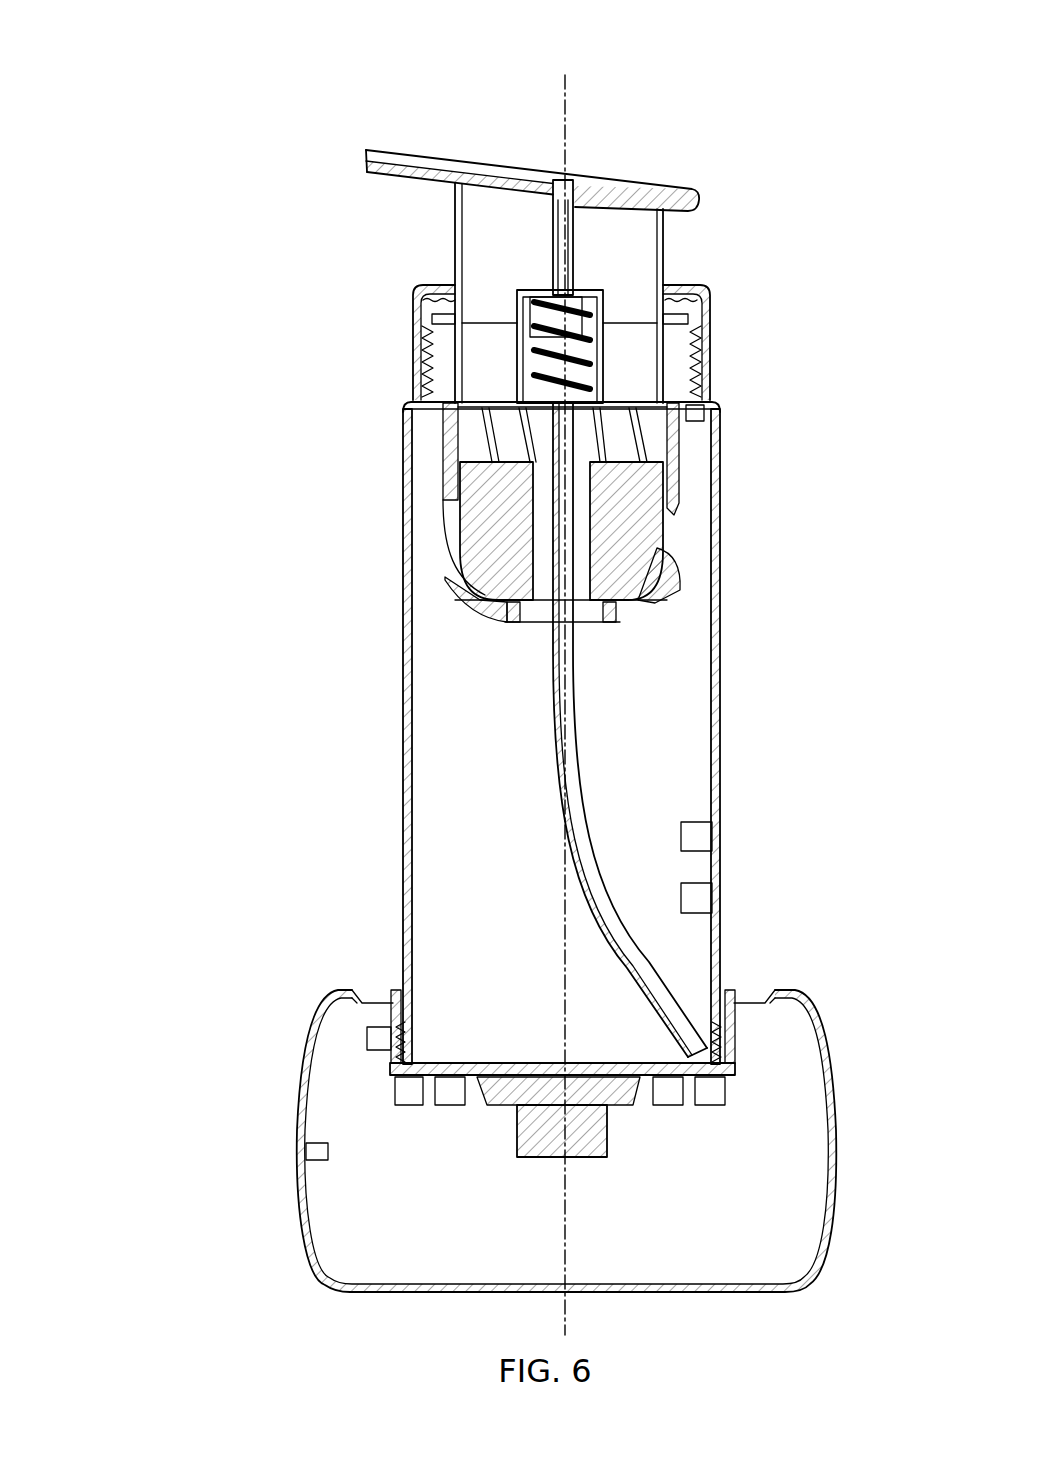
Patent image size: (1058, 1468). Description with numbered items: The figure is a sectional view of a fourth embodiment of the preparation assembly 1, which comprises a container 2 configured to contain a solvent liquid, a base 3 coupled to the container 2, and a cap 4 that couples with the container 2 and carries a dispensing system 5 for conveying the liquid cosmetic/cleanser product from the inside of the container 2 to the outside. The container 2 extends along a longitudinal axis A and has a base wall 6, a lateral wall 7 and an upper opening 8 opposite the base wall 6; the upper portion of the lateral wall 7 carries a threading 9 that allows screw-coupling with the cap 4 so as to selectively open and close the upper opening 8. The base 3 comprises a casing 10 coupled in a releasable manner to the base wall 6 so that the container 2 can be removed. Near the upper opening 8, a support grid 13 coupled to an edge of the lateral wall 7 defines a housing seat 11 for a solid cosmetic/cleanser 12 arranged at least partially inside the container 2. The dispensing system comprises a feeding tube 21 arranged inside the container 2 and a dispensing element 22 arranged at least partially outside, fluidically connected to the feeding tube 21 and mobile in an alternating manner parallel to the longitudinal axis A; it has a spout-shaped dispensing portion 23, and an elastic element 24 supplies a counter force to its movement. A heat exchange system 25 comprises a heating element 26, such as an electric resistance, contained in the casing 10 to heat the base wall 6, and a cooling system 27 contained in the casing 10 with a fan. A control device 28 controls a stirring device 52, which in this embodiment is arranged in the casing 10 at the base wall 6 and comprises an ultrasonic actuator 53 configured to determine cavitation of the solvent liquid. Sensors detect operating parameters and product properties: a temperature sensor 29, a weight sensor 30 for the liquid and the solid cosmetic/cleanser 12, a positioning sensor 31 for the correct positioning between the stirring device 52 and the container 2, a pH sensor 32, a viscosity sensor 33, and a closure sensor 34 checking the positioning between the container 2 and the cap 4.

The preparation assembly 1 is at (230, 212).
The longitudinal axis A is at (563, 127).
The container 2 is at (372, 708).
The base 3 is at (214, 1134).
The cap 4 is at (657, 135).
The dispensing system 5 is at (708, 258).
The base wall 6 is at (636, 1060).
The lateral wall 7 is at (407, 770).
The upper opening 8 is at (628, 295).
The threading 9 is at (432, 368).
The casing 10 is at (315, 1237).
The housing seat 11 is at (437, 471).
The solid cosmetic/cleanser 12 is at (623, 535).
The support grid 13 is at (675, 438).
The feeding tube 21 is at (570, 748).
The dispensing element 22 is at (500, 122).
The dispensing portion 23 is at (414, 155).
The elastic element 24 is at (530, 298).
The heat exchange system 25 is at (655, 1142).
The heating element 26 is at (450, 1090).
The cooling system 27 is at (672, 1088).
The control device 28 is at (315, 1150).
The temperature sensor 29 is at (410, 1090).
The weight sensor 30 is at (700, 1092).
The positioning sensor 31 is at (380, 1040).
The pH sensor 32 is at (697, 900).
The viscosity sensor 33 is at (697, 832).
The closure sensor 34 is at (704, 413).
The stirring device 52 is at (617, 1168).
The ultrasonic actuator 53 is at (557, 1095).